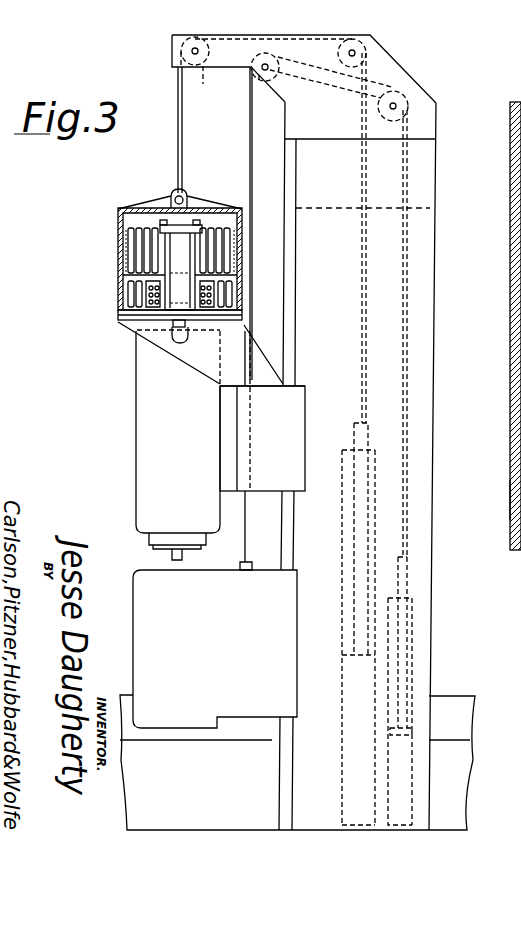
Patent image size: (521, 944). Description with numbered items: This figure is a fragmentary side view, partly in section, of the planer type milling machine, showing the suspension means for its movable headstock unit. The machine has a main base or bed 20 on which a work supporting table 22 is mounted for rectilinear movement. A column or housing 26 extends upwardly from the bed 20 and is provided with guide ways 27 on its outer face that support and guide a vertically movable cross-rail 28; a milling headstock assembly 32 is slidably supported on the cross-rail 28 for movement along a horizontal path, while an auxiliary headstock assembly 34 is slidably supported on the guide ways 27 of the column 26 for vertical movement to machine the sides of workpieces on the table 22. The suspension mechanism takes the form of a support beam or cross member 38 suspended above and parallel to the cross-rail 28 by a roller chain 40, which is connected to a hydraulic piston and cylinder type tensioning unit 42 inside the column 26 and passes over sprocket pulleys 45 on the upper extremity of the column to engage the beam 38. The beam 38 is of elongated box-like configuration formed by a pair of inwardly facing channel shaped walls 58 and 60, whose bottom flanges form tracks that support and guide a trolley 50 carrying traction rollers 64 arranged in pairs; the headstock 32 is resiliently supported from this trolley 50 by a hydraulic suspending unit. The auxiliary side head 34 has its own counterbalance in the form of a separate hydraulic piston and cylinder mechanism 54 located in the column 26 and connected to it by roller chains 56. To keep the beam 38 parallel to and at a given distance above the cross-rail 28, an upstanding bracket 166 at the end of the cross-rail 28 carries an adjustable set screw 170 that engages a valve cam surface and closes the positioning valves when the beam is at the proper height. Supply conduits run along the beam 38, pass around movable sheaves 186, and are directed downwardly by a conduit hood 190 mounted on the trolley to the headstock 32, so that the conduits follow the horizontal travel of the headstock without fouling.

The main base or bed 20 is at (458, 772).
The work supporting table 22 is at (460, 713).
The column or housing 26 is at (430, 374).
The guide ways 27 is at (282, 505).
The cross-rail 28 is at (293, 398).
The milling headstock assembly 32 is at (198, 417).
The auxiliary headstock assembly 34 is at (258, 647).
The support beam or cross member 38 is at (510, 348).
The roller chain 40 is at (182, 157).
The hydraulic piston and cylinder type tensioning unit 42 is at (378, 518).
The sprocket pulleys 45 is at (206, 68).
The trolley 50 is at (138, 324).
The hydraulic piston and cylinder mechanism 54 is at (412, 664).
The roller chains 56 is at (249, 173).
The channel shaped wall 58 is at (118, 249).
The channel shaped wall 60 is at (240, 237).
The traction rollers 64 is at (511, 501).
The upstanding bracket 166 is at (142, 257).
The set screw 170 is at (171, 342).
The movable sheaves 186 is at (218, 257).
The conduit hood 190 is at (171, 202).